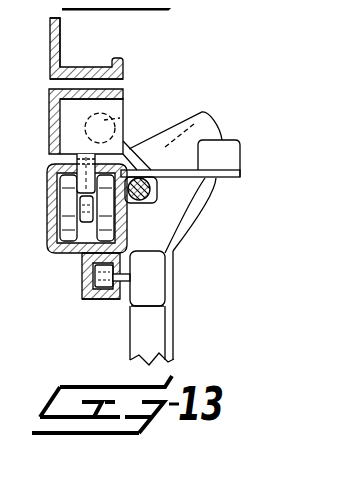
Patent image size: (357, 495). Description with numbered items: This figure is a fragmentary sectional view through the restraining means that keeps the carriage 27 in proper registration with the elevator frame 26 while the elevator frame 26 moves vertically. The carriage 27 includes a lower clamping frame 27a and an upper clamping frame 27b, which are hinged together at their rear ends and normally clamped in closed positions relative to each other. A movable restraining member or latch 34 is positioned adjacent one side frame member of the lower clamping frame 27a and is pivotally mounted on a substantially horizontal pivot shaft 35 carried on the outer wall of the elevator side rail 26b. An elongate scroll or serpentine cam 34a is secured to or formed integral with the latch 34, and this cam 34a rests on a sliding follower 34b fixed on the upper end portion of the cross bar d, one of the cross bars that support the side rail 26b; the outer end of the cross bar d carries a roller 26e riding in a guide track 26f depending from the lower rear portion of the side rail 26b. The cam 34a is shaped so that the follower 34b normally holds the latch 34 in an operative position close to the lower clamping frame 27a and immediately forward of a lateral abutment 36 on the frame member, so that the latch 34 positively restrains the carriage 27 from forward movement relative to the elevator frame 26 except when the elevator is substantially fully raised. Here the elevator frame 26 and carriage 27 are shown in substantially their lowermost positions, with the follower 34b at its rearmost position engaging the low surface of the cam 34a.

The elevator frame 26 is at (69, 247).
The side rail 26b is at (41, 213).
The roller 26e is at (74, 266).
The guide track 26f is at (74, 291).
The carriage 27 is at (68, 74).
The lower clamping frame 27a is at (40, 110).
The upper clamping frame 27b is at (39, 93).
The latch 34 is at (109, 111).
The scroll cam 34a is at (161, 162).
The sliding follower 34b is at (174, 271).
The pivot shaft 35 is at (146, 195).
The lateral abutment 36 is at (86, 98).
The cross bar d is at (137, 327).